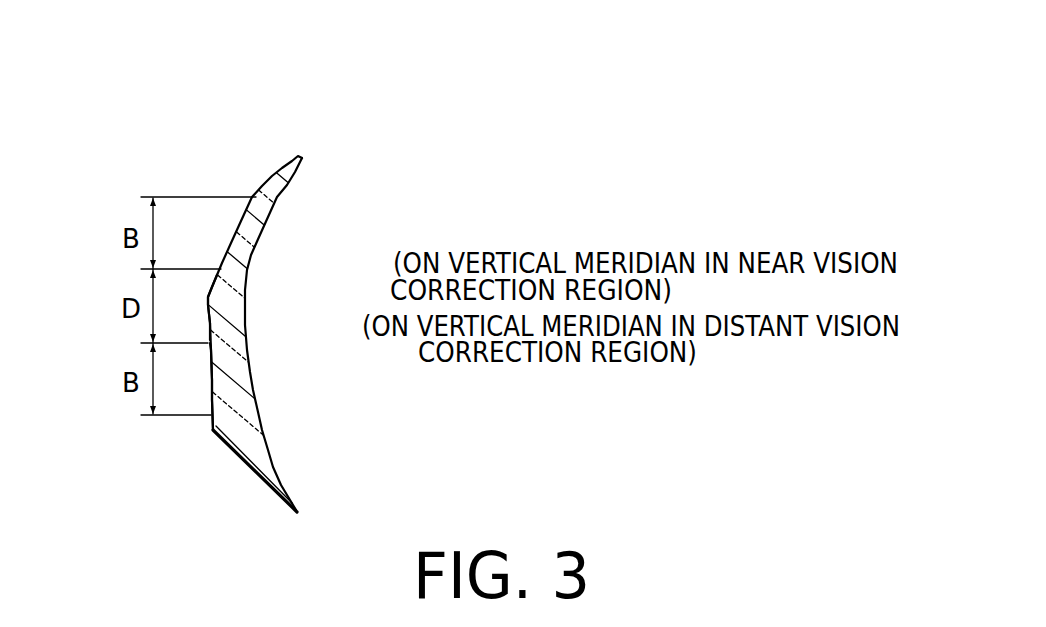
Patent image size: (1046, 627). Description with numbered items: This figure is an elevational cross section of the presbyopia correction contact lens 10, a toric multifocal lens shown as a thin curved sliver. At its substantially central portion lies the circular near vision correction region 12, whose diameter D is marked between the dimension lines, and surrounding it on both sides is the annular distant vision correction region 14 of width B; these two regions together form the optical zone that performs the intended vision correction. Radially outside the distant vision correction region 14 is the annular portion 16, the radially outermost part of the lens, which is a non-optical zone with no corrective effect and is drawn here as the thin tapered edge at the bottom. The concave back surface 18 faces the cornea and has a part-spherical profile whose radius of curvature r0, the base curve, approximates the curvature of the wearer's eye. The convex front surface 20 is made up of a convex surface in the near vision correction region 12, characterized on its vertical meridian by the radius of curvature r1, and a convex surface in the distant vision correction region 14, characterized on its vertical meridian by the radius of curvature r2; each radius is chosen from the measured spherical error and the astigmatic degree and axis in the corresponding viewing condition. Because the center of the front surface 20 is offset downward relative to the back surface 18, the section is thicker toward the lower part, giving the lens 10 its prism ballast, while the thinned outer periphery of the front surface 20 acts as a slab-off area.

The presbyopia correction contact lens 10 is at (232, 136).
The near vision correction region 12 is at (185, 314).
The distant vision correction region 14 is at (198, 388).
The annular portion 16 is at (226, 470).
The back surface 18 is at (263, 233).
The front surface 20 is at (246, 222).
The radius of curvature of back surface r0 is at (268, 421).
The radius of curvature on vertical meridian in near vision correction region r1 is at (222, 306).
The radius of curvature on vertical meridian in distant vision correction region r2 is at (250, 250).